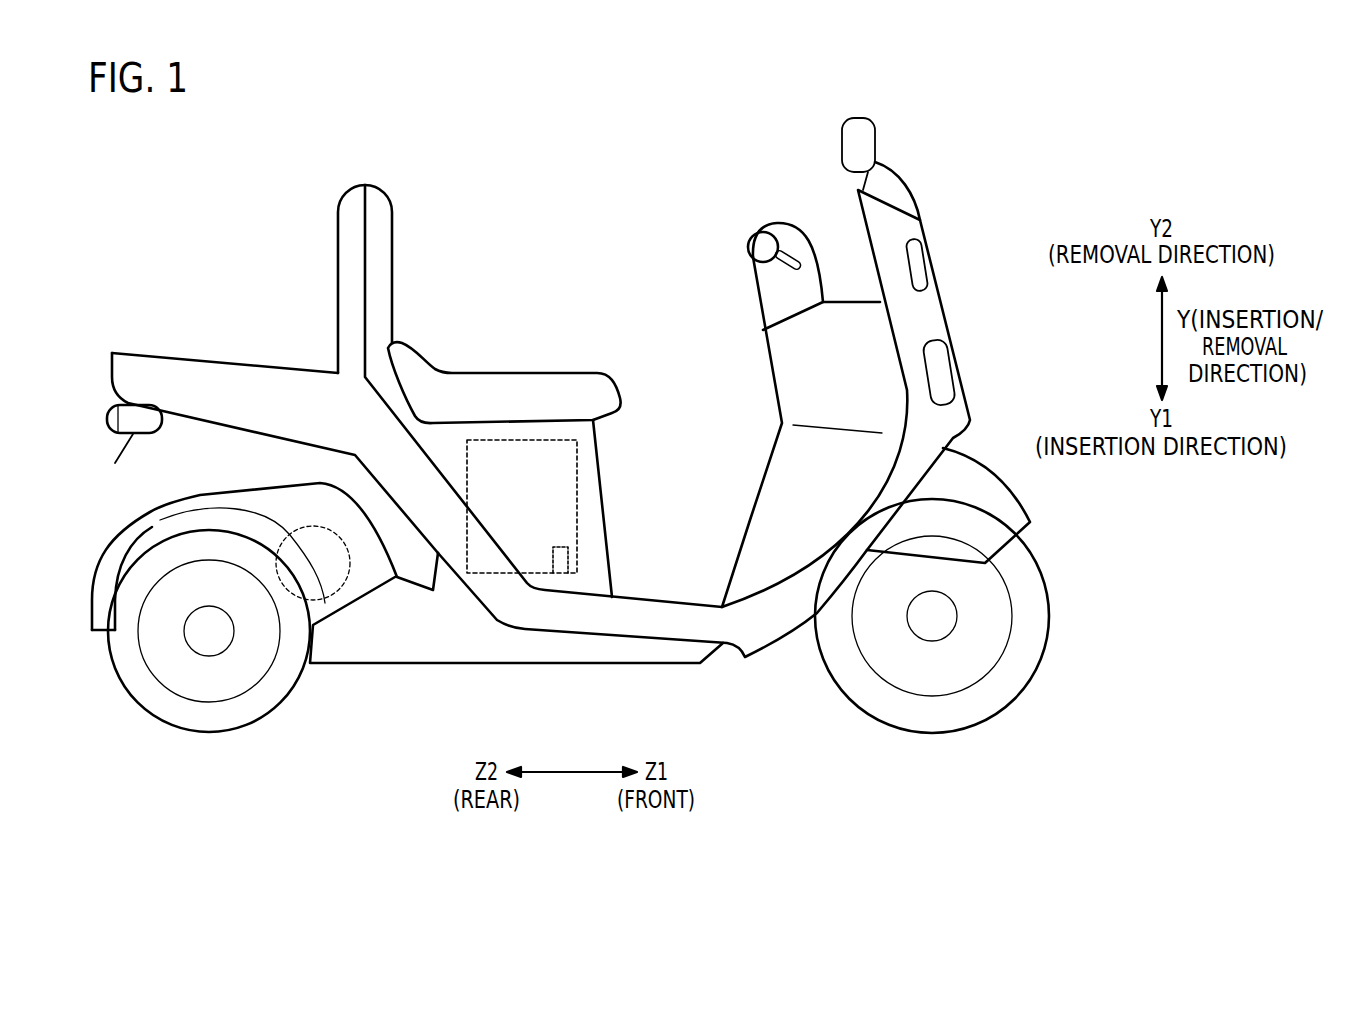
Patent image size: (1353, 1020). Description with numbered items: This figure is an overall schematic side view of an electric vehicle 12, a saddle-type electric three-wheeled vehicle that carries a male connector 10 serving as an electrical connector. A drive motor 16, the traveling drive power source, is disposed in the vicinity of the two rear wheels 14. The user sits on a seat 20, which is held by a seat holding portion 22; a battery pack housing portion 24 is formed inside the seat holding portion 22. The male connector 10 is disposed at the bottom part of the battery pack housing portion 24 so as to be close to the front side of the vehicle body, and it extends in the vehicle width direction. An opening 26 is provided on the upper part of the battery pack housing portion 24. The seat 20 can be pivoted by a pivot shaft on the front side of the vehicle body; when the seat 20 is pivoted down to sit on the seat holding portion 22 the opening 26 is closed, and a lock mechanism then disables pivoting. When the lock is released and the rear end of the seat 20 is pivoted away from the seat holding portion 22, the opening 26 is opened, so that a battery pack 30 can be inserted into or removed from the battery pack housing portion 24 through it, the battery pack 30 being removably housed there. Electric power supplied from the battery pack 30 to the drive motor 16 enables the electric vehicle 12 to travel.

The male connector 10 is at (567, 563).
The electric vehicle 12 is at (1057, 157).
The rear wheels 14 is at (117, 680).
The drive motor 16 is at (343, 583).
The seat 20 is at (480, 387).
The seat holding portion 22 is at (605, 520).
The battery pack housing portion 24 is at (577, 475).
The opening 26 is at (553, 440).
The battery pack 30 is at (548, 463).